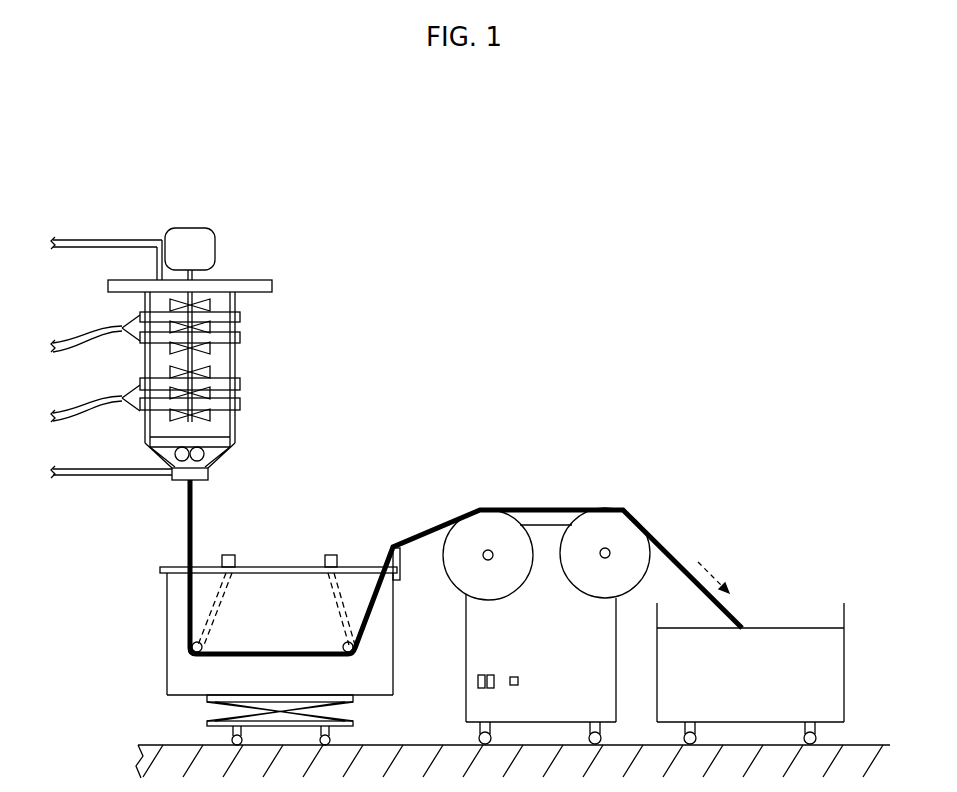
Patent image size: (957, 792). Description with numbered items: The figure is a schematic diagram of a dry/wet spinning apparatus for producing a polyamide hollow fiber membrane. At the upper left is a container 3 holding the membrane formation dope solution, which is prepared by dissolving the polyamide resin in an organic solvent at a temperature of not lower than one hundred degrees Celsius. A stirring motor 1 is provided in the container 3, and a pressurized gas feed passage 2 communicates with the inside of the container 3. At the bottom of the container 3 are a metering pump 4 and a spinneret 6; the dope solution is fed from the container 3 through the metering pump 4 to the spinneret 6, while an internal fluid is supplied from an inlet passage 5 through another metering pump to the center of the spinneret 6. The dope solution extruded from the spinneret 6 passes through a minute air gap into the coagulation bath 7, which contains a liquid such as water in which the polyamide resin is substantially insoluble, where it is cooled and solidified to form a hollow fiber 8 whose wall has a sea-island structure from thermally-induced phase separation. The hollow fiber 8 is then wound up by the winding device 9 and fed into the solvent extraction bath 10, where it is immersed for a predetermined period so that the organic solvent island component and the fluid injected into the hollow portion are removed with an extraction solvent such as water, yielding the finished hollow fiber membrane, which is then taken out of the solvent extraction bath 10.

The stirring motor 1 is at (211, 241).
The pressurized gas feed passage 2 is at (109, 238).
The container 3 is at (218, 358).
The metering pump 4 is at (227, 455).
The inlet passage 5 is at (110, 480).
The spinneret 6 is at (210, 476).
The coagulation bath 7 is at (147, 618).
The hollow fiber 8 is at (420, 535).
The winding device 9 is at (532, 476).
The solvent extraction bath 10 is at (758, 600).